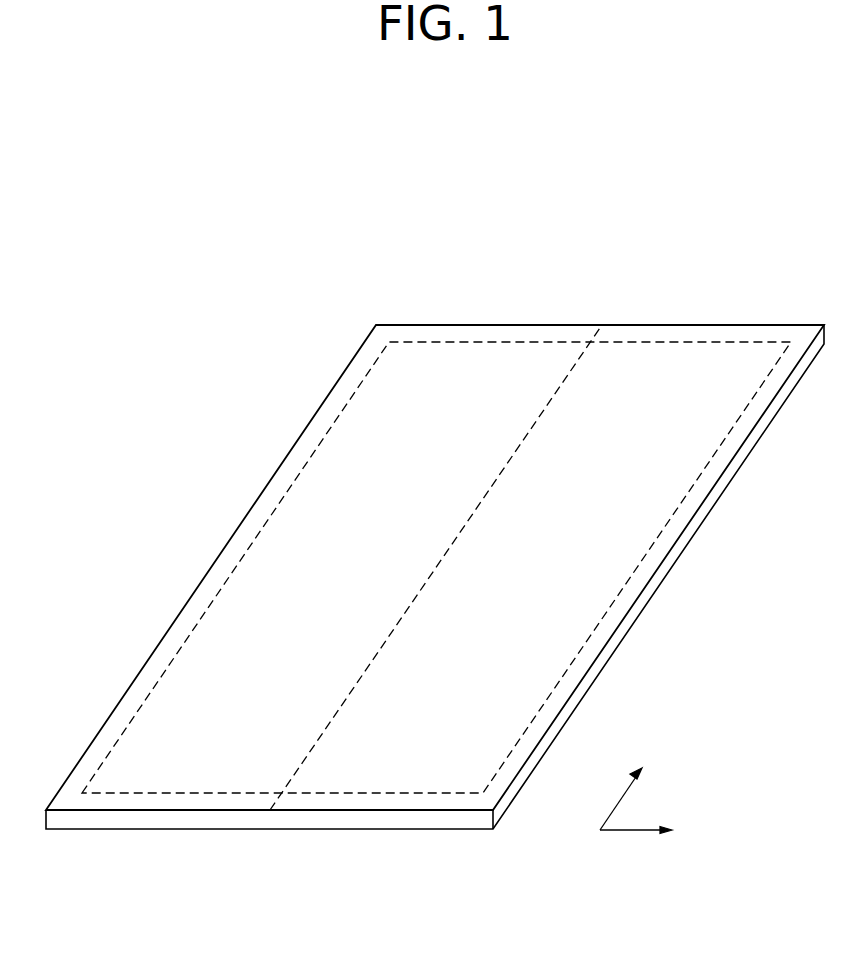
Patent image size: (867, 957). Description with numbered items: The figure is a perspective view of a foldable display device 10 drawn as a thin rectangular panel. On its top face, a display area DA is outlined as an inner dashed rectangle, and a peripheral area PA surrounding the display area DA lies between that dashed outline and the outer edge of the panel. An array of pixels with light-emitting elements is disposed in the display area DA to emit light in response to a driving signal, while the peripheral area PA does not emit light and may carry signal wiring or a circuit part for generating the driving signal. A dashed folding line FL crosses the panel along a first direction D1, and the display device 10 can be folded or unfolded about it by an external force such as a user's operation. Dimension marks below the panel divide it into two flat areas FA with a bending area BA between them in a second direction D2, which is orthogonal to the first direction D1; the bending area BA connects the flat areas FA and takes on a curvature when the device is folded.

The display device 10 is at (461, 236).
The peripheral area PA is at (313, 431).
The display area DA is at (277, 535).
The folding line FL is at (376, 627).
The flat area FA is at (229, 840).
The bending area BA is at (307, 888).
The first direction D1 is at (632, 786).
The second direction D2 is at (652, 832).